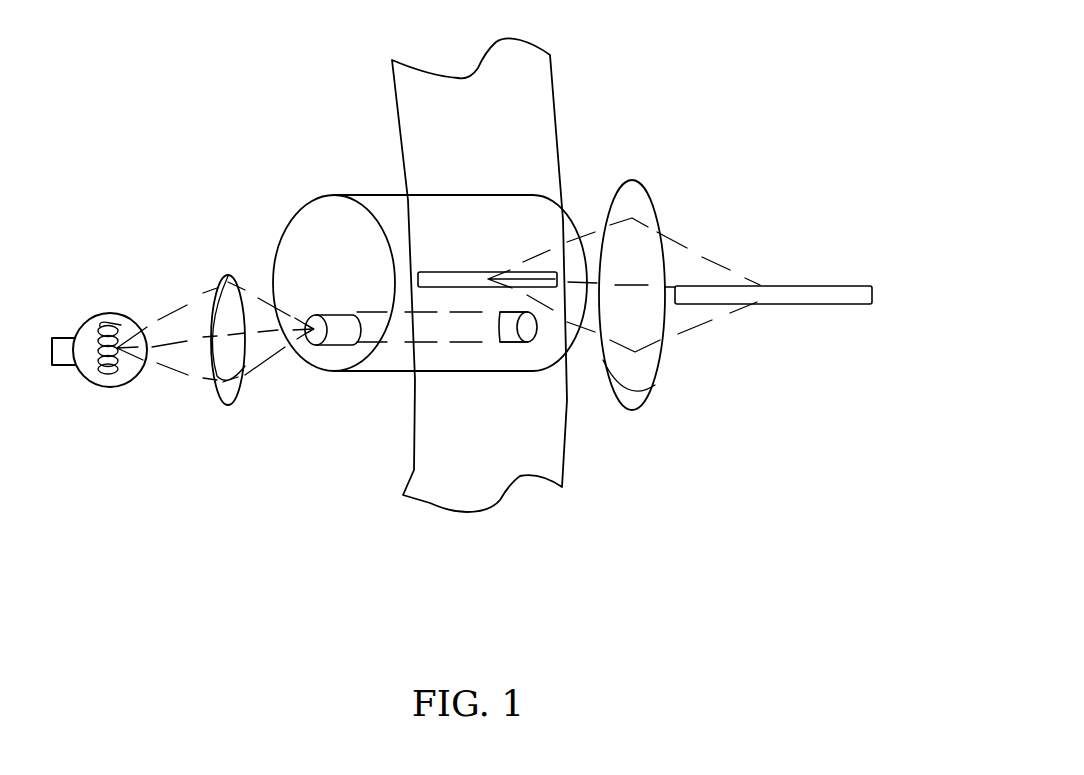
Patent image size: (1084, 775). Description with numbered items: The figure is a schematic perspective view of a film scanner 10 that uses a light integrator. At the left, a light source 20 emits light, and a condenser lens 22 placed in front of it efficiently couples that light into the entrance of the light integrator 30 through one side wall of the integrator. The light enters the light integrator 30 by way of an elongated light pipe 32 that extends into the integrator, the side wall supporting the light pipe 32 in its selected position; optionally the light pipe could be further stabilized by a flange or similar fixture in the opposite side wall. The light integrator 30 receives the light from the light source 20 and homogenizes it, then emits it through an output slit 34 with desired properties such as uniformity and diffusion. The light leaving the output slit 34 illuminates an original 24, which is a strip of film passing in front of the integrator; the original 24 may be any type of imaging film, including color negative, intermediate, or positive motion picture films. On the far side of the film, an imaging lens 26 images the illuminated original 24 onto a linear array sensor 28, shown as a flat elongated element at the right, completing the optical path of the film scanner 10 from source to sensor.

The film scanner 10 is at (674, 96).
The light source 20 is at (105, 387).
The condenser lens 22 is at (228, 405).
The original 24 is at (430, 503).
The imaging lens 26 is at (630, 409).
The linear array sensor 28 is at (787, 305).
The light integrator 30 is at (338, 371).
The light pipe 32 is at (305, 310).
The output slit 34 is at (465, 272).